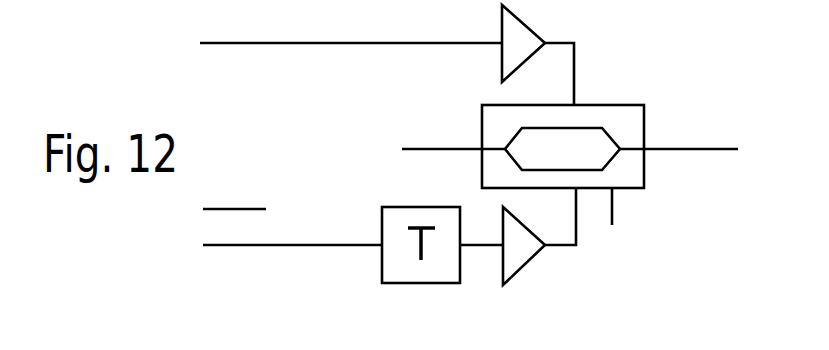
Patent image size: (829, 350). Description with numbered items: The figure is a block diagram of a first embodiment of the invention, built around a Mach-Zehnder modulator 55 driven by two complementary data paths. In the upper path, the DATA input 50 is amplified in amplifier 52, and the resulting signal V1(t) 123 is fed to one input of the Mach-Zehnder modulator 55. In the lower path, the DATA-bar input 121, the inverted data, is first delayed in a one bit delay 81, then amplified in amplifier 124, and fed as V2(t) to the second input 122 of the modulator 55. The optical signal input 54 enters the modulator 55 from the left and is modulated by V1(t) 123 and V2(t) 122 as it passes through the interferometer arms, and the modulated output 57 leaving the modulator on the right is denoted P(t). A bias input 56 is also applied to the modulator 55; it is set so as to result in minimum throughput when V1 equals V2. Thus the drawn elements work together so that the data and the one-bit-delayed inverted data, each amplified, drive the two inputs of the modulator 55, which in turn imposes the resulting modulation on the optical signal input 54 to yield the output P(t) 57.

The DATA input 50 is at (251, 45).
The amplifier 52 is at (531, 36).
The V1(t) input 123 is at (580, 98).
The Mach-Zehnder modulator 55 is at (542, 136).
The optical signal input 54 is at (437, 149).
The modulated output 57 is at (668, 155).
The bias input 56 is at (658, 229).
The second input 122 is at (558, 250).
The amplifier 124 is at (519, 263).
The one bit delay 81 is at (436, 206).
The DATA-bar input 121 is at (263, 250).